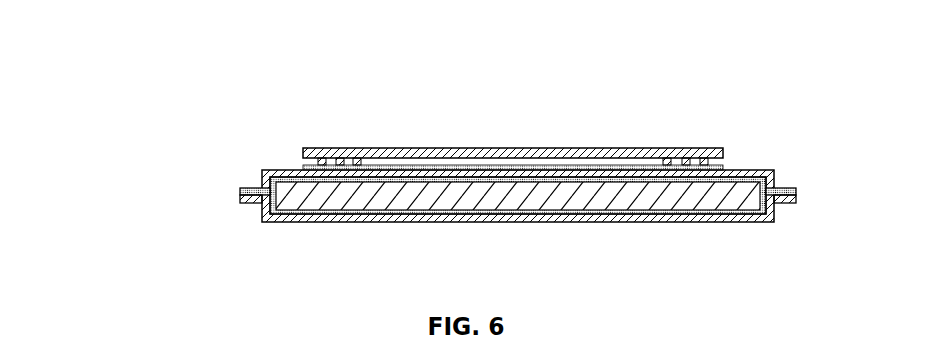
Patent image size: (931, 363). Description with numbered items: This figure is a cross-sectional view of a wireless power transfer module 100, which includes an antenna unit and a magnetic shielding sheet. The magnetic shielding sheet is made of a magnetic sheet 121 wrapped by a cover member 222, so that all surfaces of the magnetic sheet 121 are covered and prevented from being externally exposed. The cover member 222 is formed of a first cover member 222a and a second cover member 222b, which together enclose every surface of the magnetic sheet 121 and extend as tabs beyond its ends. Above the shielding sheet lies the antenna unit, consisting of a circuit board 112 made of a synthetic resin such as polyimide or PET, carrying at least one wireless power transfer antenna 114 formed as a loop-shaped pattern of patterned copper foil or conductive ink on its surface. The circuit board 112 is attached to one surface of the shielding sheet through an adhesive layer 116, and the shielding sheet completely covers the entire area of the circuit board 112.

The wireless power transfer module 100 is at (462, 66).
The circuit board 112 is at (635, 148).
The wireless power transfer antenna 114 is at (724, 161).
The adhesive layer 116 is at (723, 168).
The magnetic sheet 121 is at (301, 203).
The cover member 222 is at (125, 172).
The first cover member 222a is at (263, 221).
The second cover member 222b is at (272, 171).